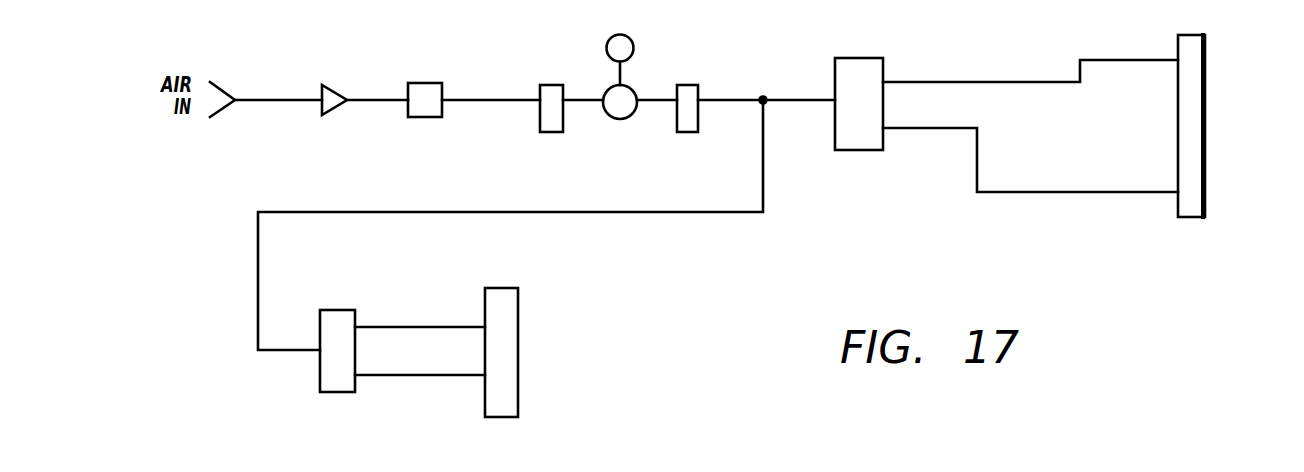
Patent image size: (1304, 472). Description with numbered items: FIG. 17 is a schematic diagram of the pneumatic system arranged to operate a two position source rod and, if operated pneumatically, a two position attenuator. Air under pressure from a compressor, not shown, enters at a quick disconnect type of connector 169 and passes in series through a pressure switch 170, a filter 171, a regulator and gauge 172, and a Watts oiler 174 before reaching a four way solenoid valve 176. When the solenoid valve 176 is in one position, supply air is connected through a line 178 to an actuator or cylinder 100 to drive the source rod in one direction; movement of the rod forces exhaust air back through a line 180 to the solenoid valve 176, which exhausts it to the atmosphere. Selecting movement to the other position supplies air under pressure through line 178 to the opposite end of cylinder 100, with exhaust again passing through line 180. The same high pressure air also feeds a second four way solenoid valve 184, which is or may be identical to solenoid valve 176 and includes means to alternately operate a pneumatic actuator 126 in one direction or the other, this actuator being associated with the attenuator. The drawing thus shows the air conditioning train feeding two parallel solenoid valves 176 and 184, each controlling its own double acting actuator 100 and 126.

The actuator or cylinder 100 is at (1227, 126).
The actuator 126 is at (528, 328).
The quick disconnect type of connector 169 is at (362, 78).
The pressure switch 170 is at (453, 79).
The filter 171 is at (524, 131).
The regulator and gauge 172 is at (587, 77).
The Watts oiler 174 is at (657, 131).
The four way solenoid valve 176 is at (842, 130).
The line 178 is at (1030, 61).
The line 180 is at (1030, 182).
The second four way solenoid valve 184 is at (361, 327).